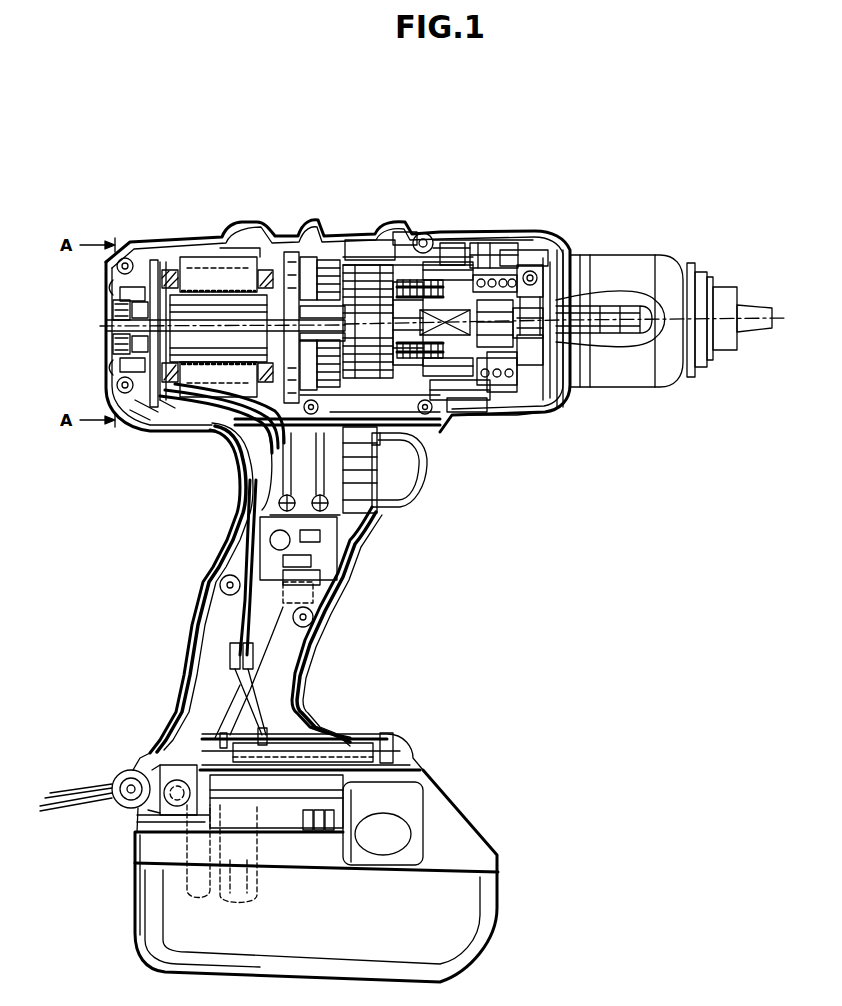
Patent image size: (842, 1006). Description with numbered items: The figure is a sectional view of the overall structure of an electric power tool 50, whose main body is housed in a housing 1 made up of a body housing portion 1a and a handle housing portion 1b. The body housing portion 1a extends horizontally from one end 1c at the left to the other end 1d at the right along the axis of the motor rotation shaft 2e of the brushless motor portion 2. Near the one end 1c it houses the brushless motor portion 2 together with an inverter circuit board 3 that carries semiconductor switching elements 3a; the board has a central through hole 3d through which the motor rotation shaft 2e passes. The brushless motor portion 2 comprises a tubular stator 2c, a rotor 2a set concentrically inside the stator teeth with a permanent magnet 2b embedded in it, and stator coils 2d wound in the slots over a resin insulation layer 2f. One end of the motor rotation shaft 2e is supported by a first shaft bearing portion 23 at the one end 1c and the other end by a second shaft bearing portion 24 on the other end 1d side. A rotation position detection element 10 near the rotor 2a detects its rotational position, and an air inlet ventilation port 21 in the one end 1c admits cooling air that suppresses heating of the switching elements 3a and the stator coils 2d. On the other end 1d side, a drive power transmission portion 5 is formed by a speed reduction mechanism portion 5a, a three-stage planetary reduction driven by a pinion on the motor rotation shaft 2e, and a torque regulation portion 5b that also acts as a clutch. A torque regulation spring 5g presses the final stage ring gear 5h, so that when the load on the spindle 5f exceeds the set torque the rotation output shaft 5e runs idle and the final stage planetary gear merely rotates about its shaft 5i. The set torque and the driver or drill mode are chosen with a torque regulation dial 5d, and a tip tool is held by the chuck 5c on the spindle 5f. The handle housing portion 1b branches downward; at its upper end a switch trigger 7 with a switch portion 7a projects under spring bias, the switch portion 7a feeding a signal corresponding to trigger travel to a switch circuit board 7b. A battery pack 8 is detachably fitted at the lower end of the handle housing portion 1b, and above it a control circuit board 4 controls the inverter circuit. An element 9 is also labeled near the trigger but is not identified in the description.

The electric power tool 50 is at (72, 180).
The housing 1 is at (333, 486).
The body housing portion 1a is at (176, 437).
The handle housing portion 1b is at (224, 507).
The one end 1c is at (108, 270).
The other end 1d is at (487, 417).
The brushless motor portion 2 is at (225, 318).
The rotor 2a is at (172, 258).
The permanent magnet 2b is at (190, 262).
The stator 2c is at (225, 270).
The stator coils 2d is at (285, 313).
The motor rotation shaft 2e is at (320, 292).
The insulation layer 2f is at (264, 272).
The inverter circuit board 3 is at (140, 250).
The semiconductor switching elements 3a is at (112, 323).
The through hole 3d is at (130, 364).
The air inlet ventilation port 21 is at (112, 288).
The first shaft bearing portion 23 is at (117, 347).
The second shaft bearing portion 24 is at (300, 268).
The rotation position detection element 10 is at (137, 423).
The drive power transmission portion 5 is at (444, 315).
The speed reduction mechanism portion 5a is at (413, 276).
The torque regulation portion 5b is at (460, 270).
The chuck 5c is at (583, 256).
The torque regulation dial 5d is at (550, 410).
The rotation output shaft 5e is at (382, 240).
The spindle 5f is at (513, 407).
The torque regulation spring 5g is at (530, 252).
The ring gear 5h is at (443, 413).
The shaft 5i is at (433, 430).
The switch trigger 7 is at (390, 490).
The switch portion 7a is at (360, 525).
The switch circuit board 7b is at (347, 600).
The trigger switch 9 is at (420, 460).
The control circuit board 4 is at (333, 743).
The battery pack 8 is at (460, 905).